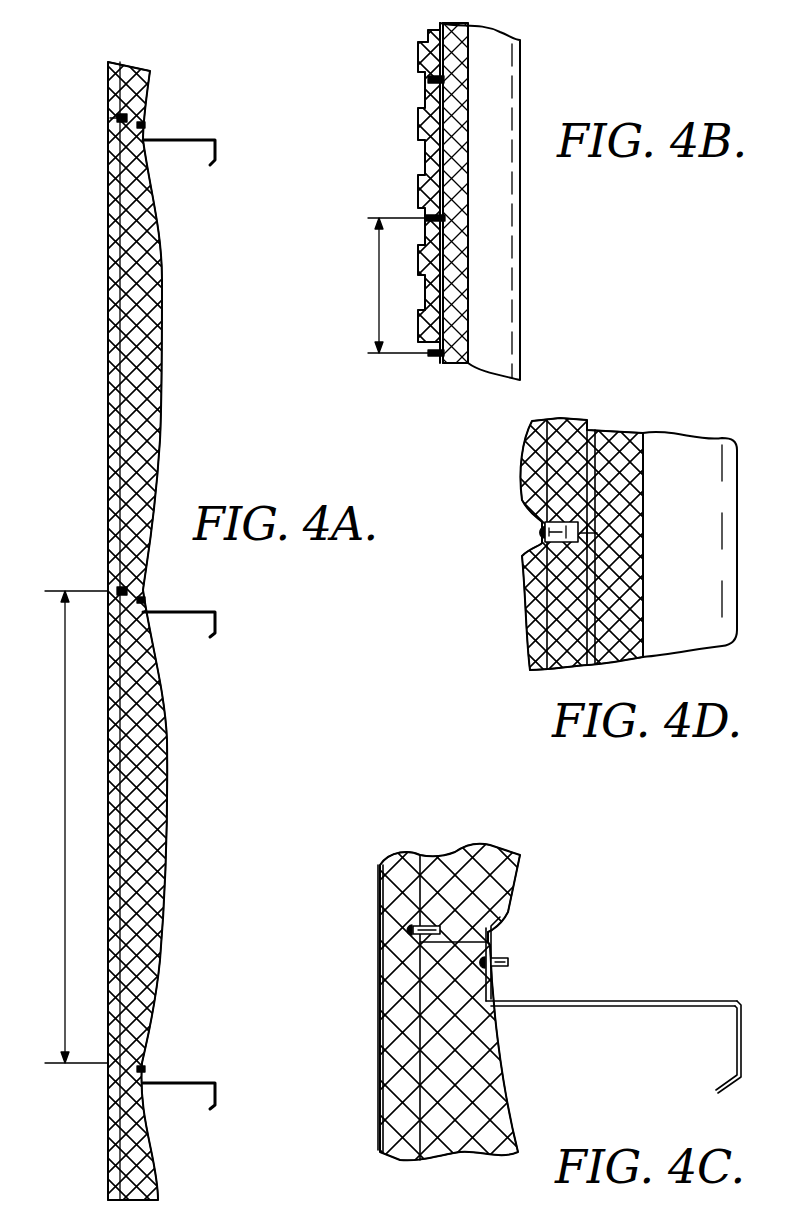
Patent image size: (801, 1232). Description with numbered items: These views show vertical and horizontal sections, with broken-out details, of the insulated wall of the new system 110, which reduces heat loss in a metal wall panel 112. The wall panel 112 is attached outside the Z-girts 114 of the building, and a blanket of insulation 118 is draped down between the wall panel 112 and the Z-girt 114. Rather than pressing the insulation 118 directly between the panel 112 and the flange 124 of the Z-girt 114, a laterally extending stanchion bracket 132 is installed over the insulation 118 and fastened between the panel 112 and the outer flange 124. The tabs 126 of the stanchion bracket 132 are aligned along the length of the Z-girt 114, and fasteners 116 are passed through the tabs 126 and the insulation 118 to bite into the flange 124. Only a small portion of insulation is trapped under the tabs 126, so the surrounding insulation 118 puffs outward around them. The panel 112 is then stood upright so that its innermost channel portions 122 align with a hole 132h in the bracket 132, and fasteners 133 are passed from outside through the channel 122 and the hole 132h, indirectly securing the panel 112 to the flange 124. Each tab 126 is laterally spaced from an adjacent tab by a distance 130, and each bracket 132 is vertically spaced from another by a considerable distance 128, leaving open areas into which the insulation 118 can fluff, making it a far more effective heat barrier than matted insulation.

In FIG. 4A, the new system 110 is at (203, 794).
In FIG. 4B, the new system 110 is at (600, 264).
In FIG. 4A, the metal wall panel 112 is at (98, 356).
In FIG. 4A, the Z-girt 114 is at (183, 140).
In FIG. 4B, the Z-girt 114 is at (515, 235).
In FIG. 4D, the Z-girt 114 is at (690, 544).
In FIG. 4C, the Z-girt 114 is at (646, 968).
In FIG. 4A, the fasteners 116 is at (145, 125).
In FIG. 4C, the fasteners 116 is at (508, 963).
In FIG. 4A, the blanket of insulation 118 is at (140, 320).
In FIG. 4B, the blanket of insulation 118 is at (454, 193).
In FIG. 4D, the blanket of insulation 118 is at (581, 544).
In FIG. 4C, the blanket of insulation 118 is at (470, 1095).
In FIG. 4A, the channel portion 122 is at (108, 397).
In FIG. 4B, the channel portion 122 is at (432, 79).
In FIG. 4C, the channel portion 122 is at (433, 852).
In FIG. 4C, the flange 124 is at (492, 950).
In FIG. 4A, the tabs 126 is at (118, 590).
In FIG. 4D, the tabs 126 is at (568, 532).
In FIG. 4C, the tabs 126 is at (495, 945).
In FIG. 4A, the distance 128 is at (65, 824).
In FIG. 4B, the distance 130 is at (379, 284).
In FIG. 4A, the stanchion bracket 132 is at (137, 108).
In FIG. 4C, the stanchion bracket 132 is at (460, 926).
In FIG. 4C, the hole 132h is at (432, 916).
In FIG. 4A, the fasteners 133 is at (114, 118).
In FIG. 4C, the fasteners 133 is at (408, 930).